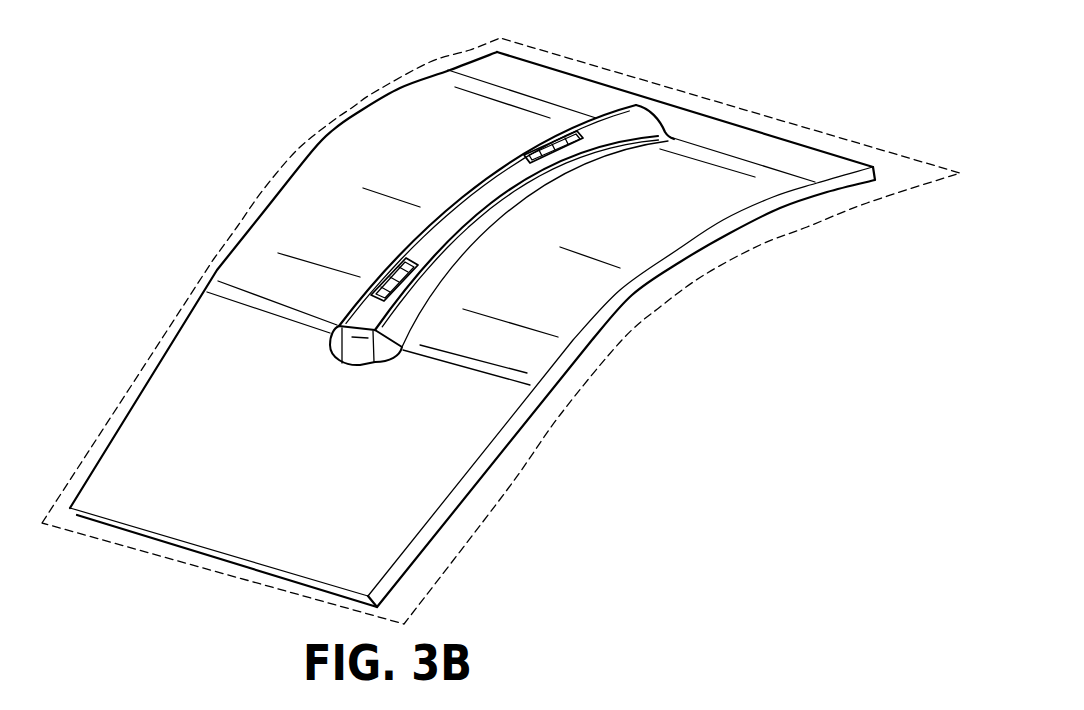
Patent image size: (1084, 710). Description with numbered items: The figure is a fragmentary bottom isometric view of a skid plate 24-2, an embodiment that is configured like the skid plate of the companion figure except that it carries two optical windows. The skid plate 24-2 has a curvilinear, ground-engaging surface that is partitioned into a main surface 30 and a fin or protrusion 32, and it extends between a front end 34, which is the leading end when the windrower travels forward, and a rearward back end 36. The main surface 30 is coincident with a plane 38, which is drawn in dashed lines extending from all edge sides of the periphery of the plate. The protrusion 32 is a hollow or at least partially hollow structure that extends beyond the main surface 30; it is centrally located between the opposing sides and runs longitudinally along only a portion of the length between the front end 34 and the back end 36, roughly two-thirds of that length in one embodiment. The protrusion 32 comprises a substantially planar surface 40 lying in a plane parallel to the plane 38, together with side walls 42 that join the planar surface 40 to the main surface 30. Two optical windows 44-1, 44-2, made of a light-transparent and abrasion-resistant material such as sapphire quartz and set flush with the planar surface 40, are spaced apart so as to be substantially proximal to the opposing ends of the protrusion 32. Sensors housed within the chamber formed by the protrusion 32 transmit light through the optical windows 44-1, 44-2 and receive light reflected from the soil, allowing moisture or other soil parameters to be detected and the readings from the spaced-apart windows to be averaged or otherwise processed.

The skid plate 24-2 is at (150, 151).
The main surface 30 is at (650, 241).
The protrusion 32 is at (498, 257).
The front end 34 is at (722, 120).
The back end 36 is at (204, 553).
The plane 38 is at (106, 421).
The planar surface 40 is at (607, 120).
The side walls 42 is at (412, 297).
The optical window 44-1 is at (538, 150).
The optical window 44-2 is at (376, 277).